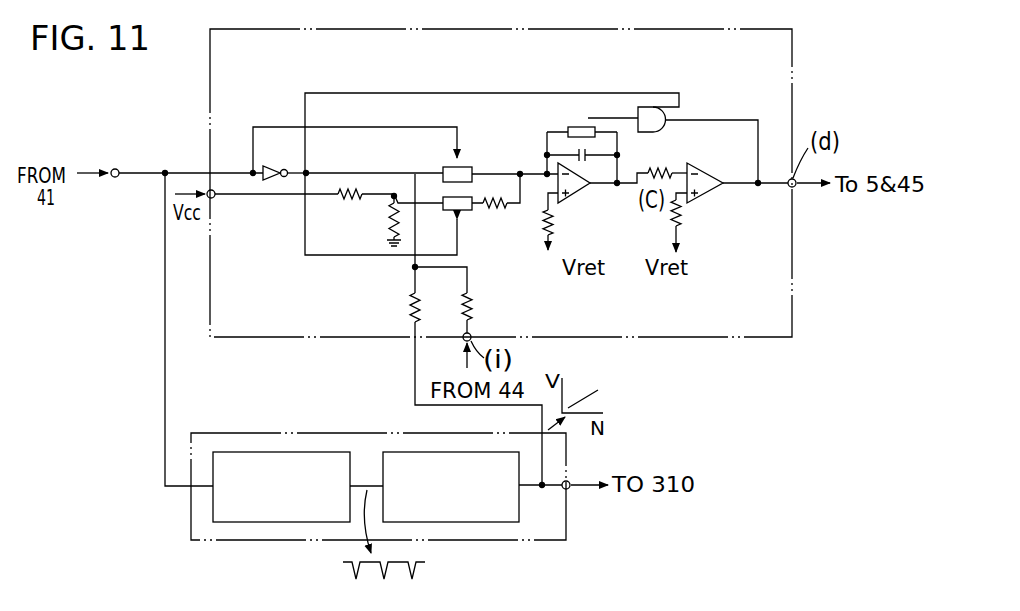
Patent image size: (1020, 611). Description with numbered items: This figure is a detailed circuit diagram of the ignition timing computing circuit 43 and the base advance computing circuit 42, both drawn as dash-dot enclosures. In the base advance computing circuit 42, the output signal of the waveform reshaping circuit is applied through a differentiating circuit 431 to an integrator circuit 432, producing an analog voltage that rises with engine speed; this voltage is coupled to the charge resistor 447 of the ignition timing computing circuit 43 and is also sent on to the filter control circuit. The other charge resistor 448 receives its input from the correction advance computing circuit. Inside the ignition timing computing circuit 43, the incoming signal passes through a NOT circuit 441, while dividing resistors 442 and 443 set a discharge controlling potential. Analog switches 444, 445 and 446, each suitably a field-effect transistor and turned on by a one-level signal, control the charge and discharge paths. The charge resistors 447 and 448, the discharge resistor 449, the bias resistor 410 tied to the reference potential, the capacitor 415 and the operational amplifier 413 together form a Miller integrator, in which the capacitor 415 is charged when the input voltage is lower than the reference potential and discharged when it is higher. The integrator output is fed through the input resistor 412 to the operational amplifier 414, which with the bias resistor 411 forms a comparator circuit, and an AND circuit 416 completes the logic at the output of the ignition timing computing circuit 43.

The ignition timing computing circuit 43 is at (793, 118).
The base advance computing circuit 42 is at (569, 518).
The NOT circuit 441 is at (277, 160).
The dividing resistor 442 is at (343, 176).
The dividing resistor 443 is at (390, 226).
The analog switch 444 is at (480, 155).
The analog switch 445 is at (466, 211).
The analog switch 446 is at (585, 126).
The charge resistor 447 is at (410, 309).
The charge resistor 448 is at (471, 311).
The discharge resistor 449 is at (560, 268).
The bias resistor 410 is at (553, 220).
The bias resistor 411 is at (681, 216).
The input resistor 412 is at (662, 170).
The operational amplifier 413 is at (586, 200).
The operational amplifier 414 is at (705, 200).
The capacitor 415 is at (592, 152).
The AND circuit 416 is at (652, 107).
The differentiating circuit 431 is at (280, 452).
The integrator circuit 432 is at (418, 452).